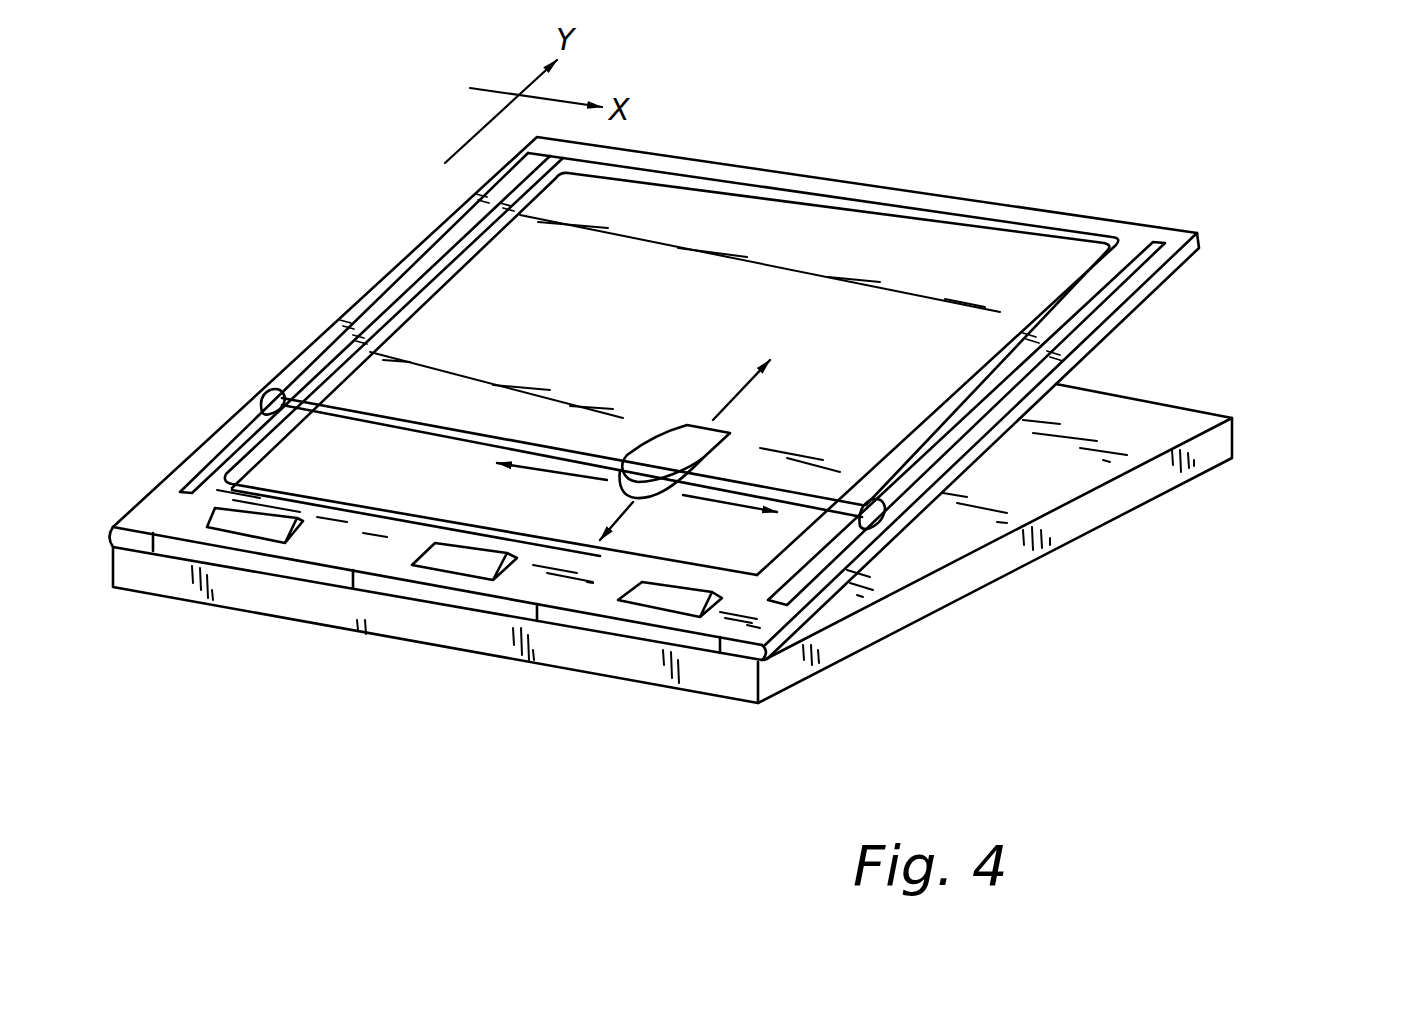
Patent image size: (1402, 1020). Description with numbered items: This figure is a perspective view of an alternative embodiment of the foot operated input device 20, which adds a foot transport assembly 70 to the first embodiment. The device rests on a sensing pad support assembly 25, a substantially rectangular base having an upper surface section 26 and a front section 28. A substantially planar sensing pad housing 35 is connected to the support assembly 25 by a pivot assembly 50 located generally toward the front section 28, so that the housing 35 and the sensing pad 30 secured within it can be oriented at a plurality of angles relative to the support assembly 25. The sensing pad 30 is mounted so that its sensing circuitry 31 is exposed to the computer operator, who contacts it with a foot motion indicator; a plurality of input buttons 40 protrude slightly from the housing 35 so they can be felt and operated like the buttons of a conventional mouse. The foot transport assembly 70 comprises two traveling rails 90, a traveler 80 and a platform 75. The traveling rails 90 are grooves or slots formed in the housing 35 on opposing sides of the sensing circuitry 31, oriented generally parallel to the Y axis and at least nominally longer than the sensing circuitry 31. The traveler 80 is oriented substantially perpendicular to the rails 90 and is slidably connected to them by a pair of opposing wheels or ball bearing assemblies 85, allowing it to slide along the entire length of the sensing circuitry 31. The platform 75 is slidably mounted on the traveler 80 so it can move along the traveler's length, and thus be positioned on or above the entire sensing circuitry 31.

The foot operated input device 20 is at (248, 230).
The sensing pad support assembly 25 is at (1242, 441).
The upper surface section 26 is at (1147, 413).
The front section 28 is at (577, 660).
The sensing pad 30 is at (683, 361).
The sensing circuitry 31 is at (877, 253).
The sensing pad housing 35 is at (822, 185).
The input buttons 40 is at (260, 525).
The pivot assembly 50 is at (180, 552).
The foot transport assembly 70 is at (657, 437).
The platform 75 is at (730, 432).
The traveler 80 is at (443, 438).
The wheels or ball bearing assemblies 85 is at (265, 392).
The traveling rails 90 is at (460, 210).